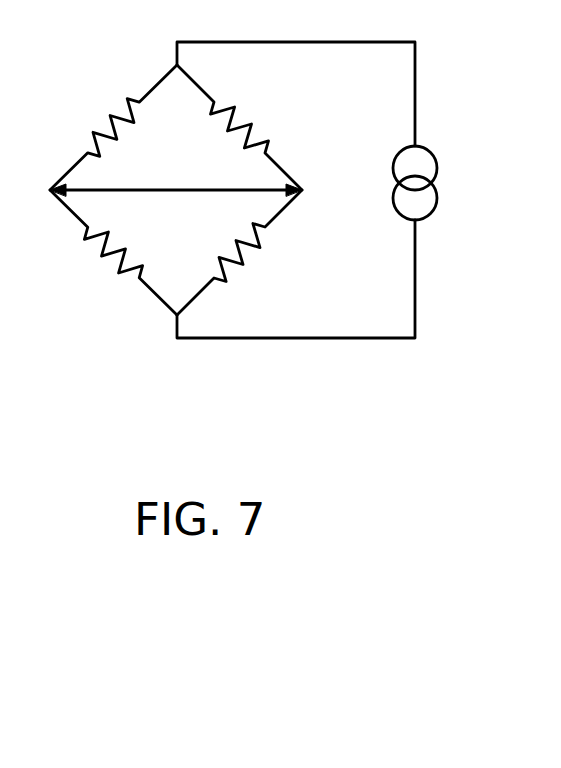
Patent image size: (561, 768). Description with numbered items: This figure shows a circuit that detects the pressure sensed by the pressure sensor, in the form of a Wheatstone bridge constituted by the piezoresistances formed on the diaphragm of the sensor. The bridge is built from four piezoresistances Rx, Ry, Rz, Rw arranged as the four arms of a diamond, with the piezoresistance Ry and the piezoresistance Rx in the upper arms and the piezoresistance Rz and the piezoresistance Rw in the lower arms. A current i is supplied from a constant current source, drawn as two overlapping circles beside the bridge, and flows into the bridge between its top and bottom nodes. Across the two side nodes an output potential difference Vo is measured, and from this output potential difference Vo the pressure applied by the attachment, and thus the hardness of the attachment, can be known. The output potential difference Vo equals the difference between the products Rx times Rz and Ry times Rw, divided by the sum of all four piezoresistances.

The piezoresistance Ry is at (113, 127).
The piezoresistance Rx is at (239, 127).
The piezoresistance Rz is at (113, 252).
The piezoresistance Rw is at (239, 252).
The output potential difference Vo is at (176, 205).
The current i is at (353, 30).